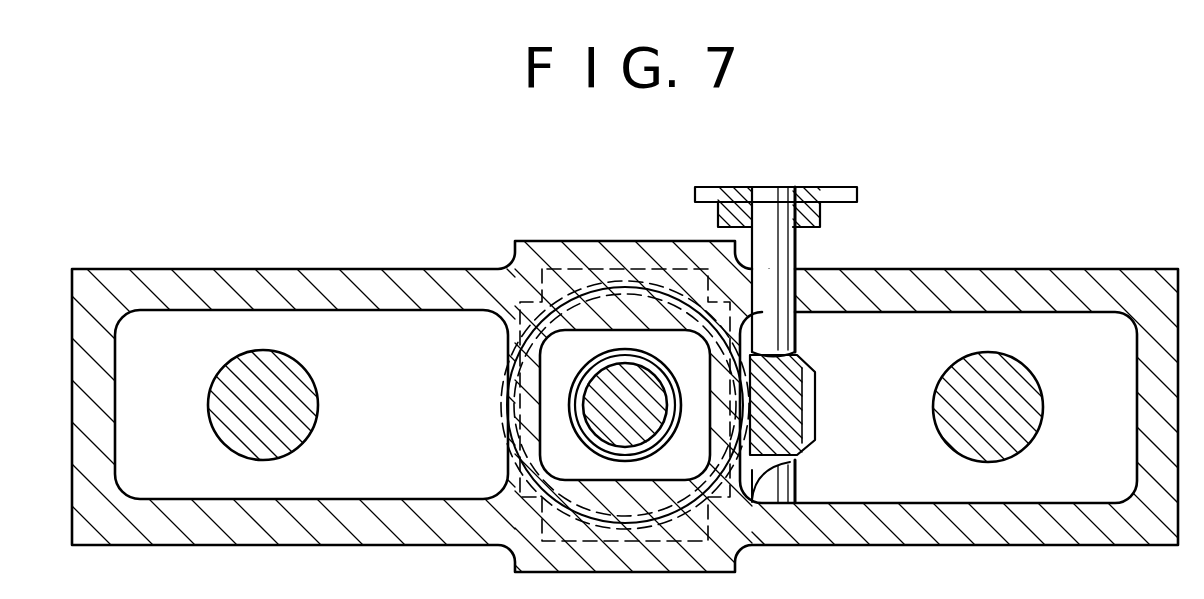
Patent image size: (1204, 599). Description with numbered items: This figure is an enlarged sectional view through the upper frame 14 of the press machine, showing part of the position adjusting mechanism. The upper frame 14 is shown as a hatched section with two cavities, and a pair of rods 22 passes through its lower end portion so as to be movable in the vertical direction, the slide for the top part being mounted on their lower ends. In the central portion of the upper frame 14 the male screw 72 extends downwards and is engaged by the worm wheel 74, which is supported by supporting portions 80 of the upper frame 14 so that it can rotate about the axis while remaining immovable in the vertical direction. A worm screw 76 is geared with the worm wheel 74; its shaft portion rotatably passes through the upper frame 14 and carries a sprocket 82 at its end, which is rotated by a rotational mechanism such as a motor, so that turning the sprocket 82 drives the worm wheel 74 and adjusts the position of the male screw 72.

The upper frame 14 is at (1072, 283).
The rods 22 is at (312, 386).
The male screw 72 is at (598, 378).
The worm wheel 74 is at (630, 288).
The worm screw 76 is at (808, 392).
The supporting portion 80 is at (532, 405).
The sprocket 82 is at (815, 194).